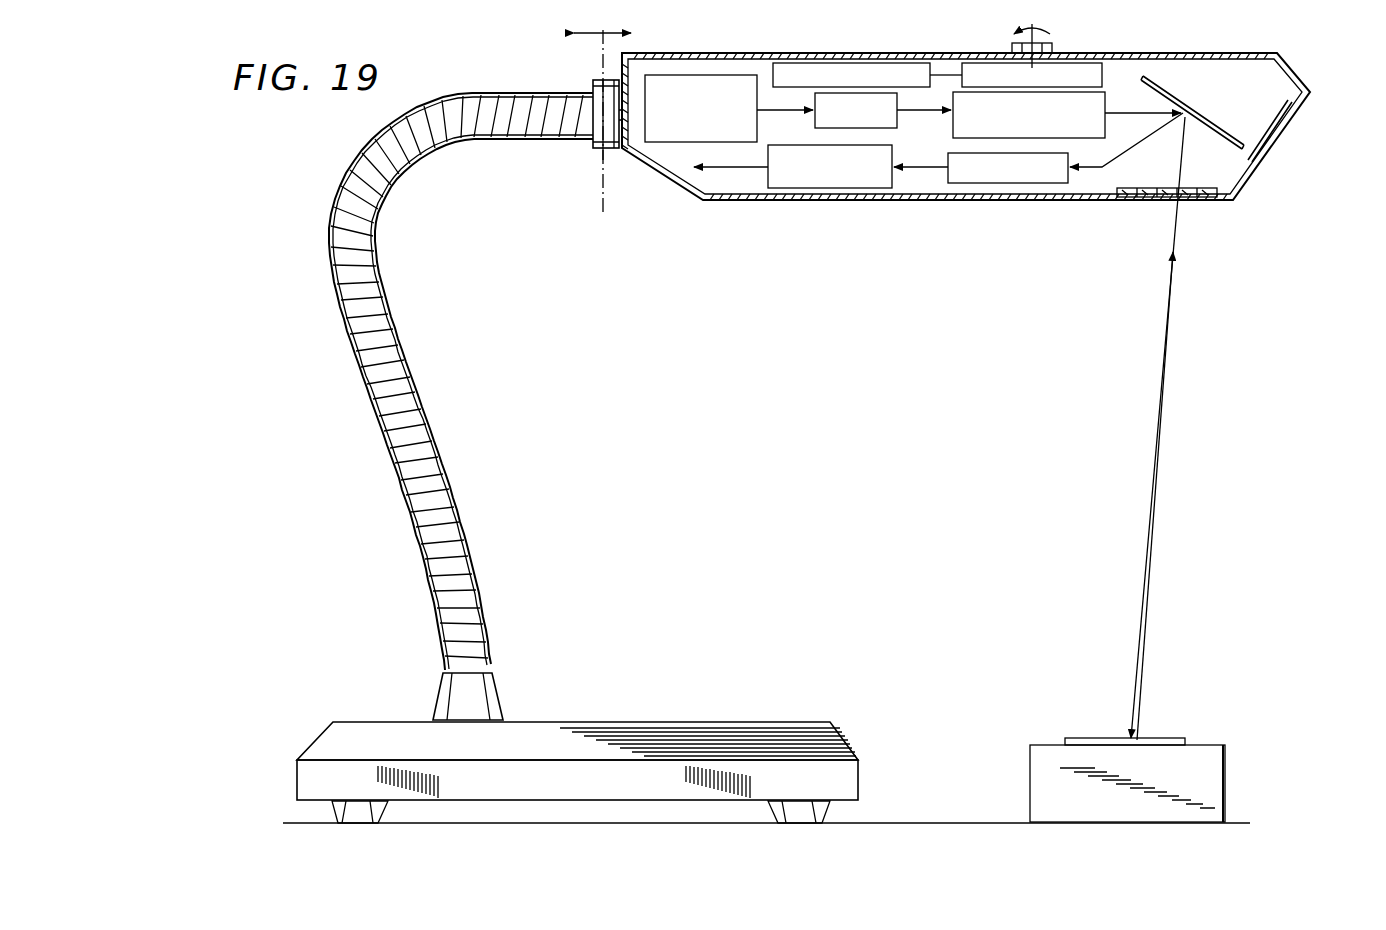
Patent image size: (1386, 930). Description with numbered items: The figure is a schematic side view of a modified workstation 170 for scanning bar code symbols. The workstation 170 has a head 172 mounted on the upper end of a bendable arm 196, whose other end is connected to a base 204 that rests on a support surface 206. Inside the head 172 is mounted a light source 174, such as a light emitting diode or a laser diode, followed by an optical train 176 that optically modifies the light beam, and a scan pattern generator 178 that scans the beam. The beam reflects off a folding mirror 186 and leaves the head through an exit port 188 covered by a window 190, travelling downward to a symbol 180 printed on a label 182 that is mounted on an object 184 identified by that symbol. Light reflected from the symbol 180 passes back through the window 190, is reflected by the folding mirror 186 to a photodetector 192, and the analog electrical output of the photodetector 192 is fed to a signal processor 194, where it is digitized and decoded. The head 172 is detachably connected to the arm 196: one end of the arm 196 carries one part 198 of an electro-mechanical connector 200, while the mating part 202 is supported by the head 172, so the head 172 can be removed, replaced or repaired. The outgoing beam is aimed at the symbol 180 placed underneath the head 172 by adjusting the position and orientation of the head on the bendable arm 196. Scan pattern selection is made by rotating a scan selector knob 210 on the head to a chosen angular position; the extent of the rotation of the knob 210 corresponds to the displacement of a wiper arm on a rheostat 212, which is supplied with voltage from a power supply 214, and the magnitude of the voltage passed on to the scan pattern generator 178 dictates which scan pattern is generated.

The workstation 170 is at (421, 90).
The head 172 is at (752, 224).
The light source 174 is at (735, 75).
The optical train 176 is at (897, 118).
The scan pattern generator 178 is at (1109, 116).
The symbol 180 is at (1137, 737).
The label 182 is at (1170, 738).
The object 184 is at (1220, 770).
The folding mirror 186 is at (1220, 140).
The exit port 188 is at (1125, 200).
The window 190 is at (1160, 188).
The photodetector 192 is at (1063, 184).
The signal processor 194 is at (885, 189).
The bendable arm 196 is at (396, 319).
The part of electro-mechanical connector 198 is at (588, 150).
The electro-mechanical connector 200 is at (586, 185).
The mating part 202 is at (614, 150).
The base 204 is at (742, 720).
The support surface 206 is at (962, 812).
The scan selector knob 210 is at (1058, 45).
The rheostat 212 is at (1100, 70).
The power supply 214 is at (810, 62).